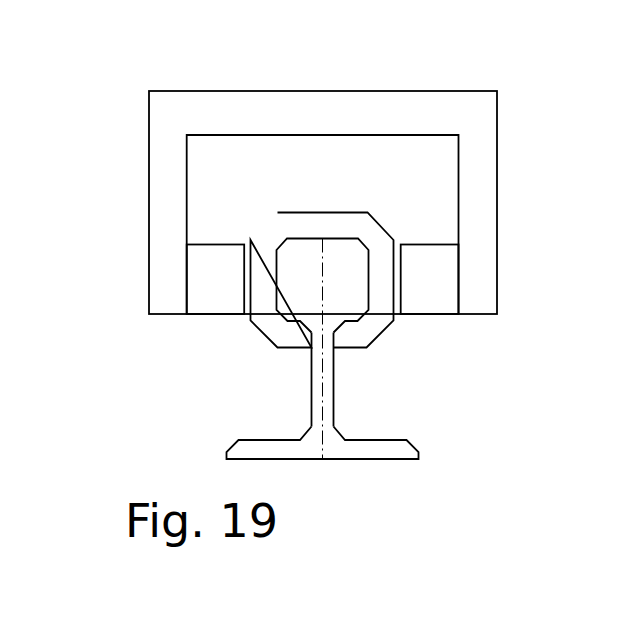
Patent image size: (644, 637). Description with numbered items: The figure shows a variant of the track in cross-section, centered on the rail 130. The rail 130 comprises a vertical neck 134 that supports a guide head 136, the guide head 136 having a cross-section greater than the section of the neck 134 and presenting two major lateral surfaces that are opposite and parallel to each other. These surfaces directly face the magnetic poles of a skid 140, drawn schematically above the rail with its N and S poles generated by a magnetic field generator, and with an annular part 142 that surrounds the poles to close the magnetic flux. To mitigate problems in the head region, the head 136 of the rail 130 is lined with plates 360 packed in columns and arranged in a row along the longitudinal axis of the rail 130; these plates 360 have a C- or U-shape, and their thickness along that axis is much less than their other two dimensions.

The rail 130 is at (392, 310).
The vertical neck 134 is at (334, 397).
The guide head 136 is at (337, 255).
The skid 140 is at (389, 202).
The annular part 142 is at (497, 185).
The plates 360 is at (272, 235).